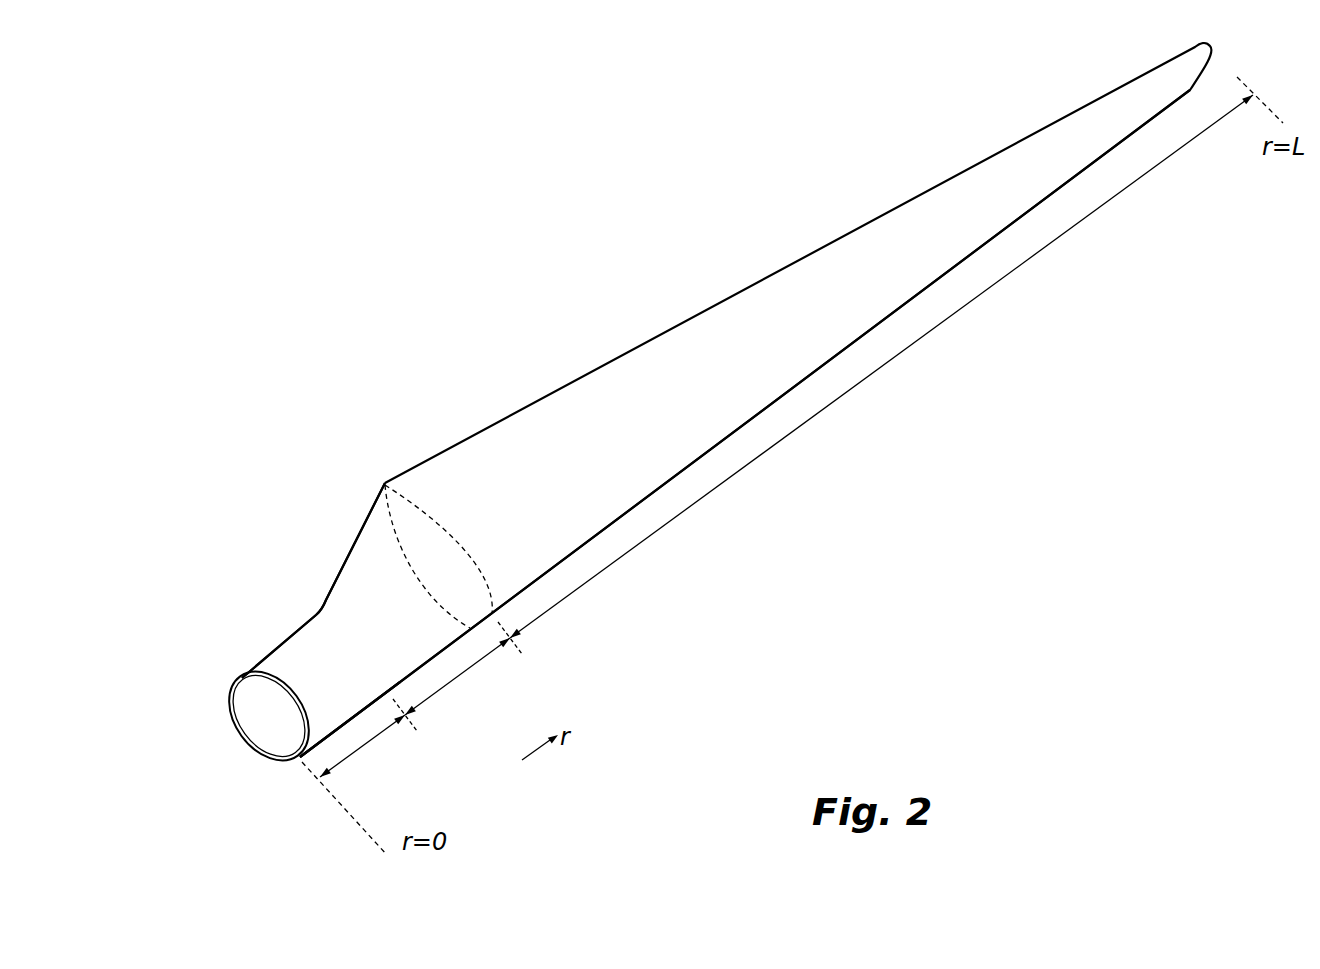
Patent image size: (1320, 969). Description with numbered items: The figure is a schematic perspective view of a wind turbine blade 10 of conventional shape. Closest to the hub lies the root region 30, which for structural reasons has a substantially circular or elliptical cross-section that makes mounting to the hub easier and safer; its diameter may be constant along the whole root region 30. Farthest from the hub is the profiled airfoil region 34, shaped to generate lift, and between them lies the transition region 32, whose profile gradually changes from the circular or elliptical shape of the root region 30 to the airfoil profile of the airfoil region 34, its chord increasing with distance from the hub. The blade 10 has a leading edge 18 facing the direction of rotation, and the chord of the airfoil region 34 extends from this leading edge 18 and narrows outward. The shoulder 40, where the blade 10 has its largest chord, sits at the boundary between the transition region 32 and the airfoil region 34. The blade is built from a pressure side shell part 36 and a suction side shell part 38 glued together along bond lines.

The wind turbine blade 10 is at (541, 268).
The leading edge 18 is at (915, 295).
The root region 30 is at (363, 750).
The transition region 32 is at (460, 687).
The airfoil region 34 is at (805, 423).
The pressure side shell part 36 is at (258, 671).
The suction side shell part 38 is at (230, 683).
The shoulder 40 is at (385, 483).